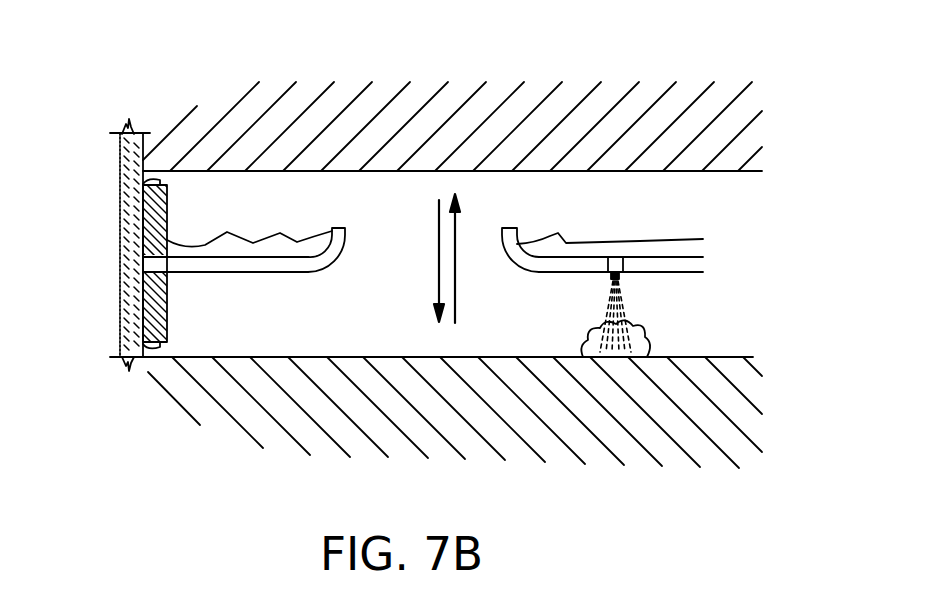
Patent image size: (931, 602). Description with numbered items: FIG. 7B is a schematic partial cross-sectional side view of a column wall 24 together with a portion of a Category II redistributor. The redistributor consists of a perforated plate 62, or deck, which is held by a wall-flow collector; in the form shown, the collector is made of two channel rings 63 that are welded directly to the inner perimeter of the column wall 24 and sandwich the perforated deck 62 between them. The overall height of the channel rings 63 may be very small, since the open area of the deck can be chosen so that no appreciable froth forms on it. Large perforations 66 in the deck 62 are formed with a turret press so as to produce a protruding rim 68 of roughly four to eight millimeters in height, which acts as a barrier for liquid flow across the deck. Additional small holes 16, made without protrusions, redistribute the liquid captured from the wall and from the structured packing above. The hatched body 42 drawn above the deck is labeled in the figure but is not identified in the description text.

The small holes 16 is at (624, 257).
The column wall 24 is at (120, 217).
The upper body 42 is at (693, 124).
The perforated plate 62 is at (308, 263).
The channel rings 63 is at (160, 312).
The large perforations 66 is at (400, 222).
The protruding rim 68 is at (505, 228).